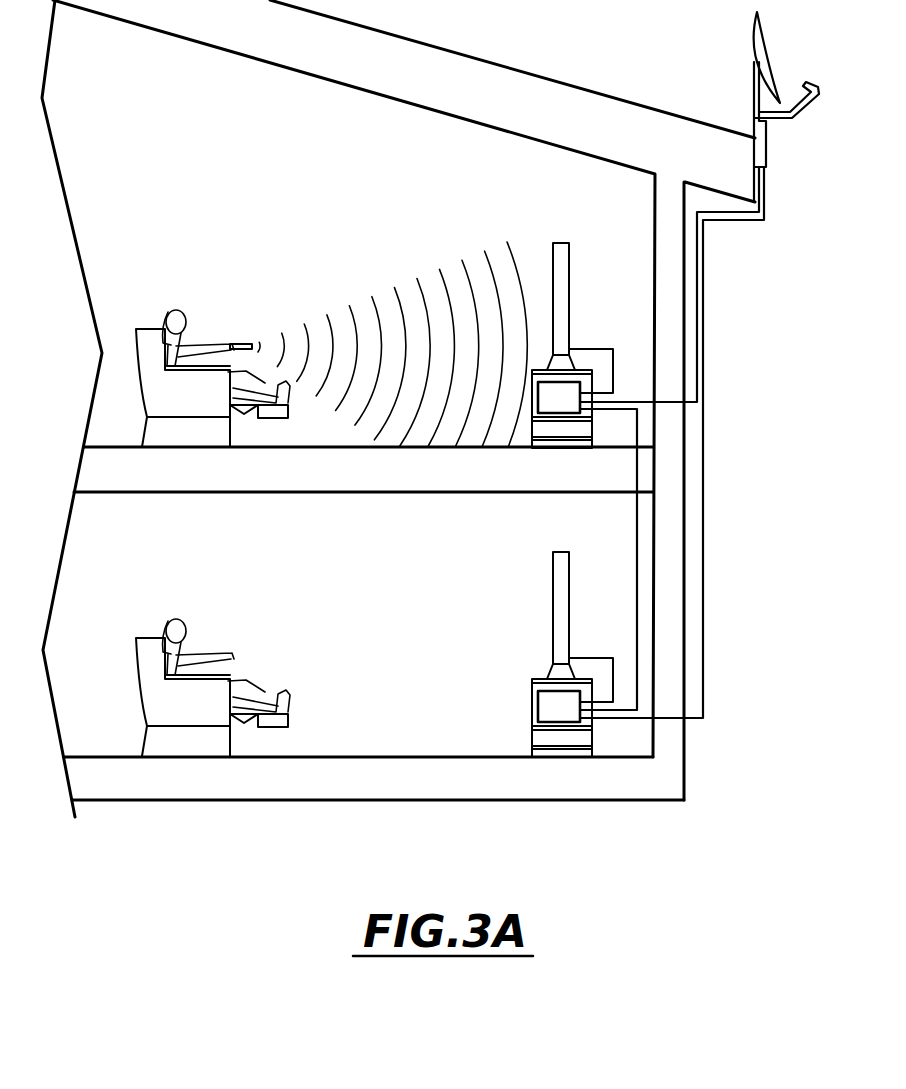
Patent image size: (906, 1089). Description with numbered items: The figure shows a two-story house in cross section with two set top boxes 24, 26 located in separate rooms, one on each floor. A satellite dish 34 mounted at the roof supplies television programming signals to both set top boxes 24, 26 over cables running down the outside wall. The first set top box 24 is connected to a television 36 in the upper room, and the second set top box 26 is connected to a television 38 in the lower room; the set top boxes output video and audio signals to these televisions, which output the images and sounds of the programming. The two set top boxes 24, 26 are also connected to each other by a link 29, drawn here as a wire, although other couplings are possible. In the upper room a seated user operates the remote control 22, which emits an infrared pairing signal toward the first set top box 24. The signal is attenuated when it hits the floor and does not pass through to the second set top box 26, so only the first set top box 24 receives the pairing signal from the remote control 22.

The remote control 22 is at (250, 343).
The first set top box 24 is at (569, 409).
The second set top box 26 is at (569, 718).
The link 29 is at (637, 503).
The satellite dish 34 is at (768, 38).
The television 36 is at (560, 243).
The television 38 is at (560, 552).